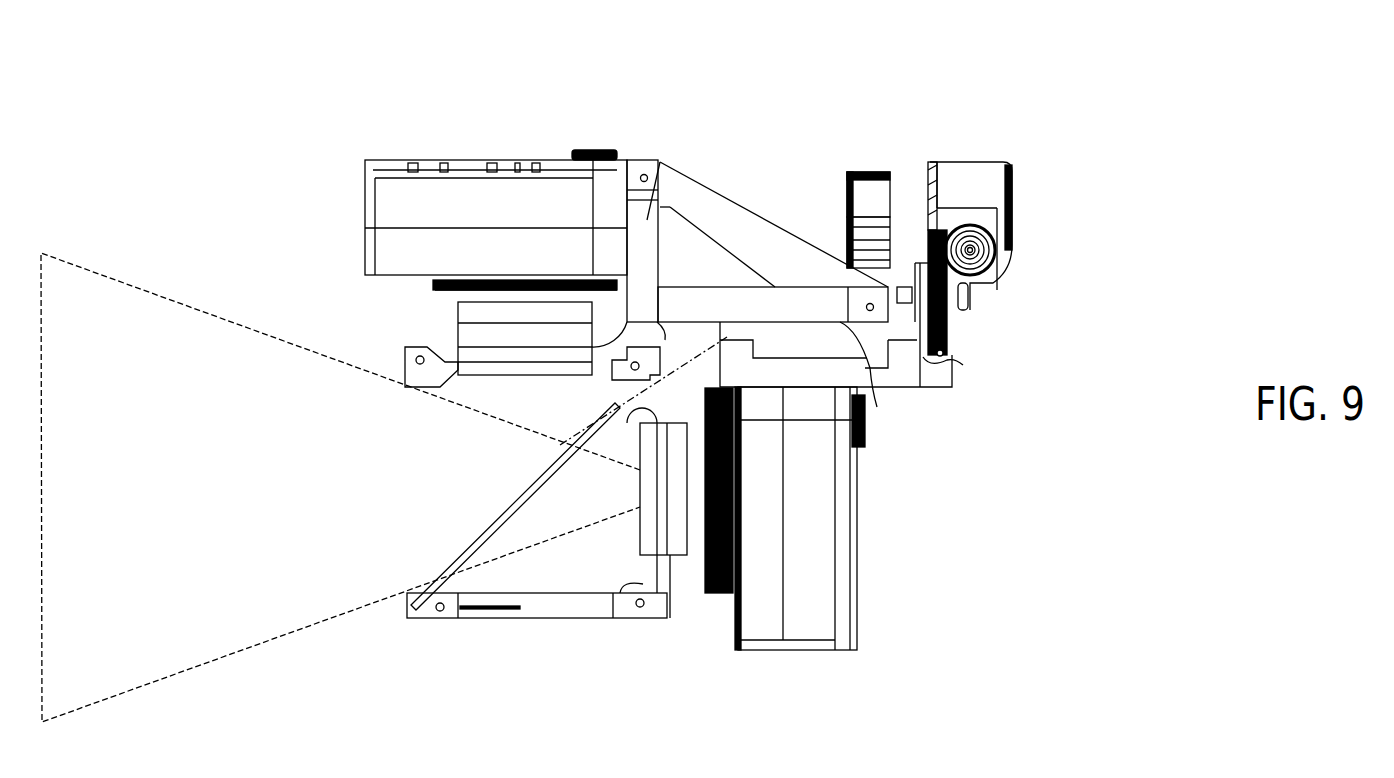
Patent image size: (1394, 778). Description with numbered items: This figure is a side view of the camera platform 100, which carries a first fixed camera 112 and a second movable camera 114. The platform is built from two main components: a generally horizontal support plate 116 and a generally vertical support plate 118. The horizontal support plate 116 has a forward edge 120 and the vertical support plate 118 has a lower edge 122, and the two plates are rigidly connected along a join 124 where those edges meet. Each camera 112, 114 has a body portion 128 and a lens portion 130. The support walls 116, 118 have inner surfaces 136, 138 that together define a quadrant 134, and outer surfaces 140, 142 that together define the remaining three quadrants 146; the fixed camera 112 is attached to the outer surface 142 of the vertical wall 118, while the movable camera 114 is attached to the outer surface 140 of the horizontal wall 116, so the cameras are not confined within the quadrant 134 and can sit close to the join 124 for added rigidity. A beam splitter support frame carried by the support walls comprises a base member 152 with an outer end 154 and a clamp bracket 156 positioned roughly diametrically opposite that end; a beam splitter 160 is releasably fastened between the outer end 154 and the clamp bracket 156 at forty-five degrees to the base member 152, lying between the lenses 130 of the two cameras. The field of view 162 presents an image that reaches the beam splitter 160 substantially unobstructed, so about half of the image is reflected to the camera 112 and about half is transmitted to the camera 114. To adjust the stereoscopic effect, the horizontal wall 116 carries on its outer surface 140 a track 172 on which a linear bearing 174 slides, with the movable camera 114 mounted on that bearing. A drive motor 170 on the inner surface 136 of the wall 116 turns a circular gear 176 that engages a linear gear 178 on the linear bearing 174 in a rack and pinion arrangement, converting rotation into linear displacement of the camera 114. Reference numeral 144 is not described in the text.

The camera platform 100 is at (256, 68).
The first fixed camera 112 is at (384, 162).
The second movable camera 114 is at (857, 513).
The horizontal support plate 116 is at (785, 304).
The vertical support plate 118 is at (648, 240).
The forward edge 120 is at (722, 330).
The lower edge 122 is at (628, 324).
The join 124 is at (640, 302).
The body portion 128 is at (366, 263).
The lens portion 130 is at (458, 314).
The quadrant 134 is at (718, 277).
The inner surface 136 is at (752, 287).
The inner surface 138 is at (673, 173).
The outer surface 140 is at (879, 421).
The outer surface 142 is at (630, 208).
The mounting bracket 144 is at (532, 367).
The remaining three quadrants 146 is at (535, 412).
The base member 152 is at (555, 607).
The outer end 154 is at (525, 612).
The clamp bracket 156 is at (598, 437).
The beam splitter 160 is at (515, 503).
The field of view 162 is at (200, 400).
The drive motor 170 is at (965, 183).
The track 172 is at (800, 375).
The linear bearing 174 is at (950, 380).
The circular gear 176 is at (948, 332).
The linear gear 178 is at (963, 365).